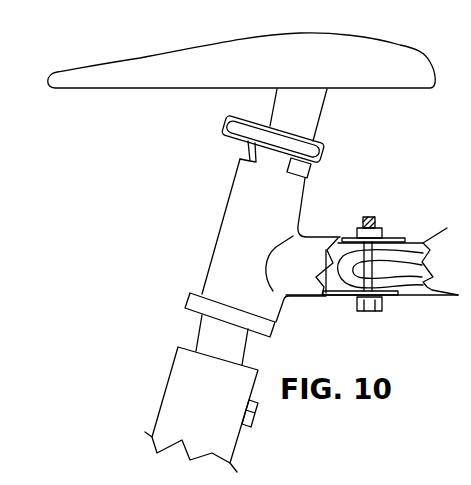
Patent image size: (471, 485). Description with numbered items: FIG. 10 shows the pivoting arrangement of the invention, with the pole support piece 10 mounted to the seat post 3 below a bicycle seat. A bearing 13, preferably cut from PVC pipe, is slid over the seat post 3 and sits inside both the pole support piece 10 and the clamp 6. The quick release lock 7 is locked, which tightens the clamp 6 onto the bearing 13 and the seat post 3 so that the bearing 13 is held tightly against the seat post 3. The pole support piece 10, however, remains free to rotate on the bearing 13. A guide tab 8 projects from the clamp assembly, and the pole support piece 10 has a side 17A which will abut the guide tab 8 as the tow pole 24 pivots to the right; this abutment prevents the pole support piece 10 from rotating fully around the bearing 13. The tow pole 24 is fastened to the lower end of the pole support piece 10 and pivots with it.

The seat post 3 is at (318, 123).
The quick release lock 7 is at (235, 127).
The clamp 6 is at (327, 153).
The bearing 13 is at (247, 151).
The guide tab 8 is at (315, 170).
The pole support piece 10 is at (210, 250).
The side 17A is at (300, 178).
The tow pole 24 is at (410, 242).